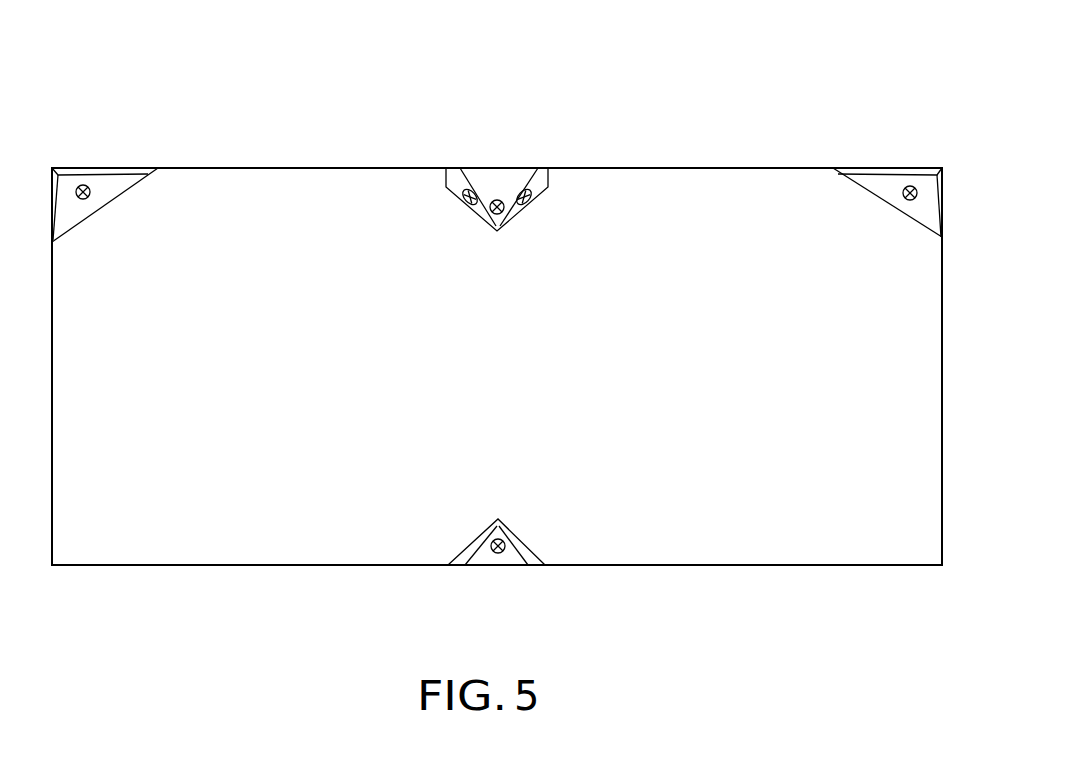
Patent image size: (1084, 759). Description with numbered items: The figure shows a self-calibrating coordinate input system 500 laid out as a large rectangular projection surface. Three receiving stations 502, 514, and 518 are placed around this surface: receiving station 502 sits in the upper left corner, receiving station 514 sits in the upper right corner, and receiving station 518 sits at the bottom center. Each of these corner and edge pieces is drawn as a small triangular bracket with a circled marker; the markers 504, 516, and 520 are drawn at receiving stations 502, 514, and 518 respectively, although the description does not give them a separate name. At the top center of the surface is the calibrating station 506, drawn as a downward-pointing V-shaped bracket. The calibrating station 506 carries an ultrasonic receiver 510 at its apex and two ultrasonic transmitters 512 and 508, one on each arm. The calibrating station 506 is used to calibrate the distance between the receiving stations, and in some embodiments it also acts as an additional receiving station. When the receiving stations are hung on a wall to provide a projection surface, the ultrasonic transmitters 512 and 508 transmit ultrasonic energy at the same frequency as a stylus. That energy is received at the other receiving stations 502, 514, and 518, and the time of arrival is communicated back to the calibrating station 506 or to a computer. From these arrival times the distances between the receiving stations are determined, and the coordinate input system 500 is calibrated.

The self-calibrating coordinate input system 500 is at (731, 96).
The receiving station 502 is at (132, 193).
The upper left fastener 504 is at (102, 214).
The calibrating station 506 is at (548, 185).
The ultrasonic transmitter 508 is at (544, 216).
The ultrasonic receiver 510 is at (509, 238).
The ultrasonic transmitter 512 is at (451, 217).
The receiving station 514 is at (858, 184).
The upper right fastener 516 is at (891, 214).
The receiving station 518 is at (474, 539).
The bottom fastener 520 is at (521, 522).